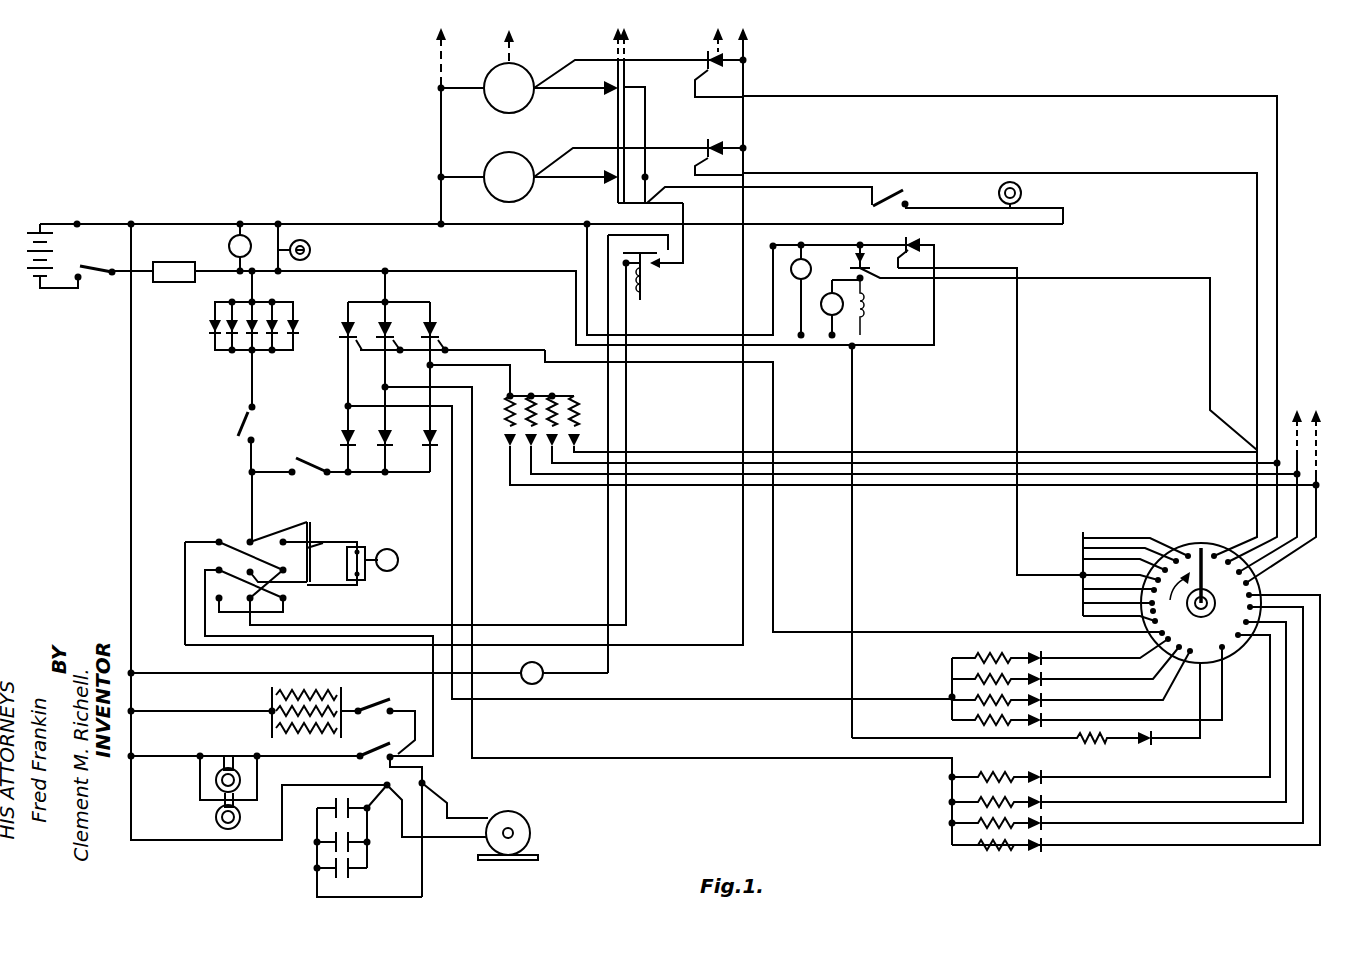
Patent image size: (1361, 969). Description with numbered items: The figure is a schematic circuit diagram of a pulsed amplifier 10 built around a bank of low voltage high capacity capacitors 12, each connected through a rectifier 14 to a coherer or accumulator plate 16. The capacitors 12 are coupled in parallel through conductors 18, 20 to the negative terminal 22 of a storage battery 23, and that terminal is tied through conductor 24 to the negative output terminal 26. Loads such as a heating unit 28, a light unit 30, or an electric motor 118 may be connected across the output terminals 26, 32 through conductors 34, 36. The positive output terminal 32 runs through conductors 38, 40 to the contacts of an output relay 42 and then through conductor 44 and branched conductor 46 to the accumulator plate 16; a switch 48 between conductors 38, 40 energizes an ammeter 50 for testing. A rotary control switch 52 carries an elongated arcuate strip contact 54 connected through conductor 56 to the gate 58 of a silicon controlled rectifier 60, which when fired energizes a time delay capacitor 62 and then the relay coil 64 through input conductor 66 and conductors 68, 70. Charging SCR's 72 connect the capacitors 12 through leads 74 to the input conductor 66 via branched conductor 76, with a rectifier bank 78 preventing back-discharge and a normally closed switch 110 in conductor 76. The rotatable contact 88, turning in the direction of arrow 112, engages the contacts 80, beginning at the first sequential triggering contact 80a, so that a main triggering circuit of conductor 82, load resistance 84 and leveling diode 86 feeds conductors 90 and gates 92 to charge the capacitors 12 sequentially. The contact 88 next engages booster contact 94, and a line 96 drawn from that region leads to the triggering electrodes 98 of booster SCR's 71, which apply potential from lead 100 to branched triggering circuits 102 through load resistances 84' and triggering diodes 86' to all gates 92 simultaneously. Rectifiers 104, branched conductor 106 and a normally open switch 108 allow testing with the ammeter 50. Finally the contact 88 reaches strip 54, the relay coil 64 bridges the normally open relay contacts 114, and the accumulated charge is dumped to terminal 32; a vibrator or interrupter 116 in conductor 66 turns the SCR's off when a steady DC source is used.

The pulsed amplifier 10 is at (932, 86).
The low voltage high capacity capacitors 12 is at (496, 153).
The rectifier 14 is at (606, 92).
The coherer or accumulator plate 16 is at (624, 80).
The conductor 18 is at (440, 130).
The conductor 20 is at (258, 224).
The negative terminal 22 is at (80, 223).
The storage battery 23 is at (36, 232).
The conductor 24 is at (131, 434).
The negative output terminal 26 is at (384, 783).
The heating unit 28 is at (276, 688).
The light unit 30 is at (238, 757).
The positive output terminal 32 is at (428, 784).
The conductor 34 is at (182, 698).
The conductor 36 is at (170, 755).
The conductor 38 is at (373, 638).
The conductor 40 is at (547, 624).
The output relay 42 is at (660, 256).
The conductor 44 is at (686, 206).
The branched conductor 46 is at (646, 119).
The switch 48 is at (220, 538).
The ammeter 50 is at (383, 550).
The rotary control switch 52 is at (1186, 543).
The elongated arcuate strip contact 54 is at (1162, 540).
The conductor 56 is at (1017, 272).
The control electrode or gate 58 is at (905, 250).
The silicon controlled rectifier 60 is at (922, 244).
The time delay capacitor 62 is at (804, 247).
The relay coil 64 is at (645, 288).
The input conductor 66 is at (890, 368).
The conductor 68 is at (748, 262).
The conductor 70 is at (584, 240).
The booster SCR's 71 is at (440, 325).
The charging SCR's 72 is at (728, 62).
The leads 74 is at (590, 52).
The branched conductor 76 is at (254, 380).
The rectifier bank 78 is at (213, 322).
The contacts 80 is at (1250, 540).
The first sequential triggering contact 80a is at (1214, 550).
The conductor 82 is at (851, 572).
The load resistance 84 is at (995, 754).
The load resistances 84' is at (998, 867).
The leveling diode 86 is at (1169, 714).
The triggering diodes 86' is at (1049, 867).
The rotatable contact 88 is at (1204, 574).
The conductors 90 is at (1277, 390).
The triggering electrodes or gates 92 is at (697, 84).
The booster contact 94 is at (1152, 640).
The line 96 is at (912, 634).
The triggering electrodes 98 is at (432, 342).
The lead 100 is at (388, 285).
The branched triggering circuits 102 is at (592, 392).
The rectifiers 104 is at (428, 436).
The branched conductor 106 is at (332, 476).
The normally open switch 108 is at (310, 460).
The normally closed switch 110 is at (243, 420).
The arrow 112 is at (1170, 596).
The normally open relay contacts 114 is at (622, 264).
The vibrator or interrupter 116 is at (180, 250).
The electric motor 118 is at (520, 826).